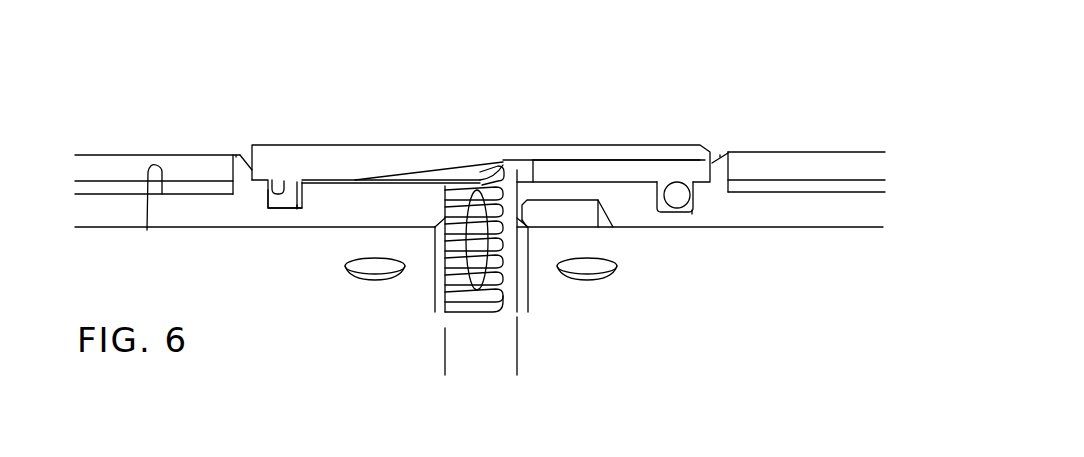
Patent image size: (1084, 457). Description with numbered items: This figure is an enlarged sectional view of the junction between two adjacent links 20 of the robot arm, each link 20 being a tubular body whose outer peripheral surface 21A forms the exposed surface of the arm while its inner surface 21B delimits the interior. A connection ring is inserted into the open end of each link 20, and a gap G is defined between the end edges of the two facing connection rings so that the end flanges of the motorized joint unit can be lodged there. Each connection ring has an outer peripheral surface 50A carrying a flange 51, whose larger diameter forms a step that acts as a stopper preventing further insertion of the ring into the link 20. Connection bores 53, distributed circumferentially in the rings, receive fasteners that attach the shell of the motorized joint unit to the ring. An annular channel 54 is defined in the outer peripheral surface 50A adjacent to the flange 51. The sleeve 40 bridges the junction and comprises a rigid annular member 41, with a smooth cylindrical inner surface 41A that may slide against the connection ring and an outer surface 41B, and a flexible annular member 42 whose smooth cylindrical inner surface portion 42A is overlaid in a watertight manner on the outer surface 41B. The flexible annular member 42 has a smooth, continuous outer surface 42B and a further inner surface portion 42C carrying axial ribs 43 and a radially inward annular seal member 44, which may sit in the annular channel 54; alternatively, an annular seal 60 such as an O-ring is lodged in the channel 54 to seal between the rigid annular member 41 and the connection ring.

The link 20 is at (165, 155).
The outer peripheral surface 21A is at (117, 155).
The inner surface 21B is at (102, 180).
The outer peripheral surface 50A is at (147, 230).
The flange 51 is at (247, 155).
The sleeve 40 is at (570, 101).
The rigid annular member 41 is at (645, 173).
The cylindrical inner surface 41A is at (617, 180).
The outer surface 41B is at (561, 158).
The flexible annular member 42 is at (352, 157).
The smooth cylindrical inner surface portion 42A is at (614, 163).
The outer surface 42B is at (462, 143).
The inner surface portion 42C is at (323, 180).
The axial ribs 43 is at (492, 163).
The annular seal member 44 is at (285, 200).
The connection bores 53 is at (383, 278).
The annular channel 54 is at (297, 207).
The annular seal 60 is at (677, 195).
The gap G is at (605, 348).